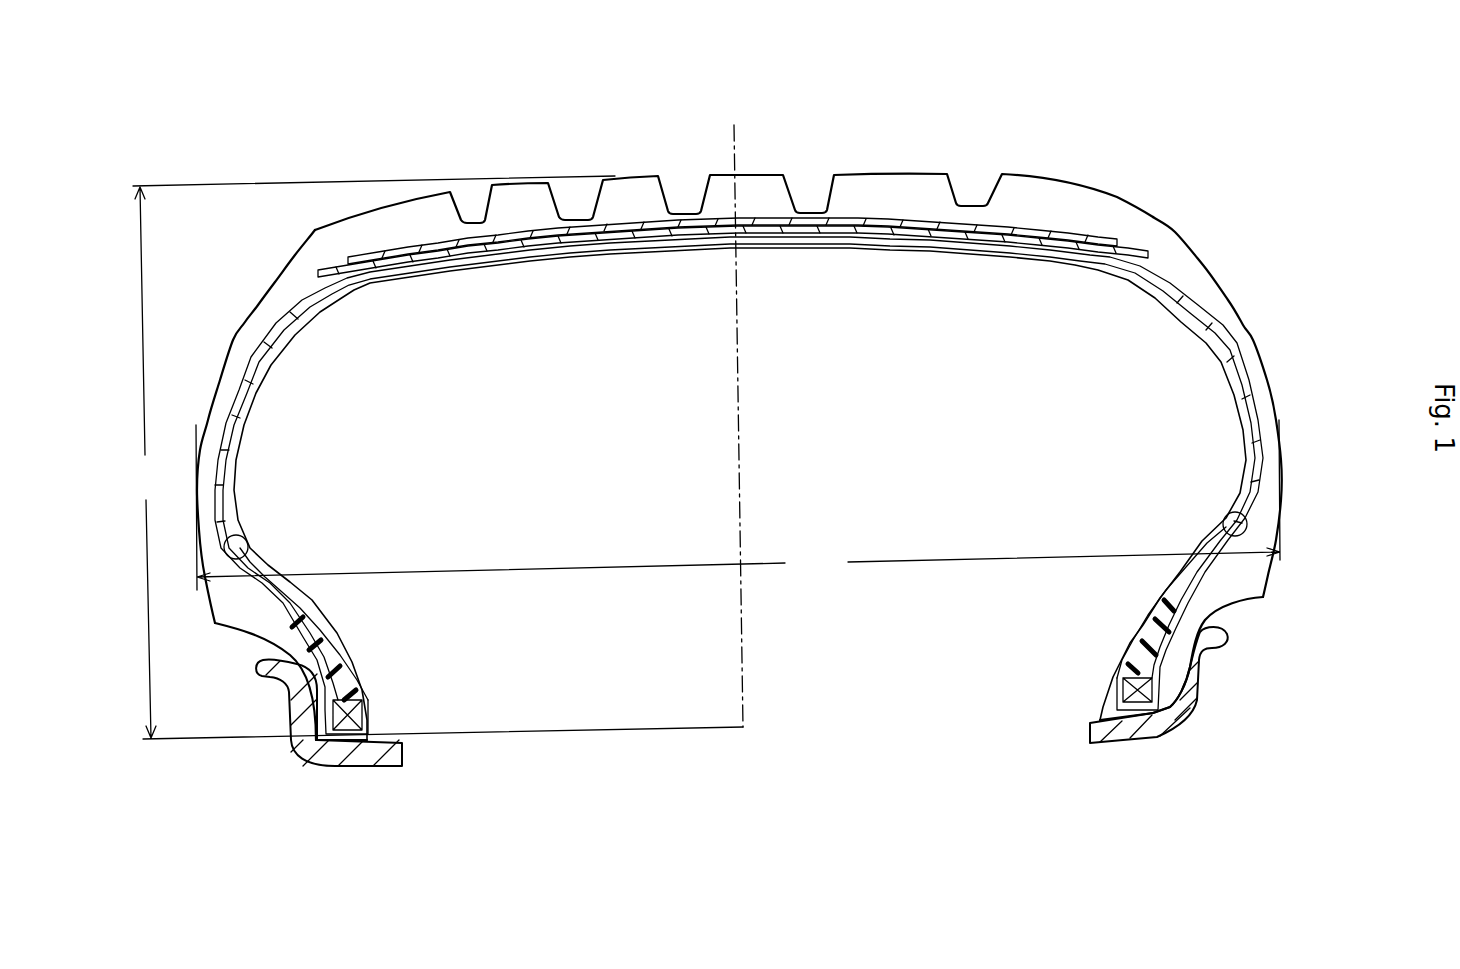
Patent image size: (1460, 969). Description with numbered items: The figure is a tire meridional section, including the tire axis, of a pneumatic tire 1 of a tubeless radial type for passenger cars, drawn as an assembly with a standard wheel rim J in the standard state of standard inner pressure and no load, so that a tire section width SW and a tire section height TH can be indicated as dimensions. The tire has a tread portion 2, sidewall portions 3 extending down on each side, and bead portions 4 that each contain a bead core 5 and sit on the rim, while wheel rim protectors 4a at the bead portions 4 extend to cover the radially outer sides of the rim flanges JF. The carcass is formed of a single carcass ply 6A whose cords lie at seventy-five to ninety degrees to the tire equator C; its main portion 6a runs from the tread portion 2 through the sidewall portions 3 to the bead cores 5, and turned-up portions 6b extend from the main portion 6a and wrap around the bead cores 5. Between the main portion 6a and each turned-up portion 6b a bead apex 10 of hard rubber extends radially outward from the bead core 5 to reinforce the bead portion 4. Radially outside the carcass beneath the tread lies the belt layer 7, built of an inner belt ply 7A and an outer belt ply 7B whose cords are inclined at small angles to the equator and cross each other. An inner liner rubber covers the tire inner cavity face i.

The pneumatic tire 1 is at (1100, 159).
The tread portion 2 is at (907, 150).
The sidewall portions 3 is at (251, 437).
The bead portions 4 is at (385, 669).
The wheel rim protectors 4a is at (215, 623).
The bead cores 5 is at (353, 717).
The carcass ply 6A is at (1078, 360).
The main portion 6a is at (1248, 393).
The turned-up portions 6b is at (227, 530).
The belt layer 7 is at (905, 313).
The inner belt ply 7A is at (808, 230).
The outer belt ply 7B is at (853, 226).
The bead apexes 10 is at (323, 657).
The tire inner cavity face i is at (1160, 302).
The tire equator C is at (734, 411).
The tire section height TH is at (426, 457).
The tire section width SW is at (738, 505).
The standard wheel rim J is at (1214, 706).
The rim flanges JF is at (1192, 685).